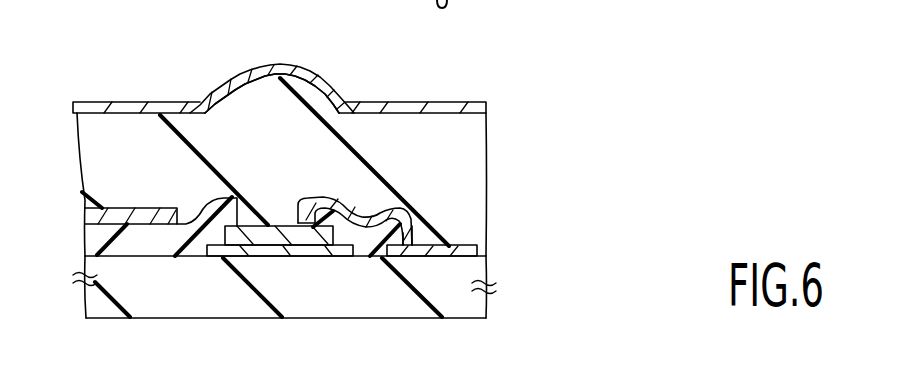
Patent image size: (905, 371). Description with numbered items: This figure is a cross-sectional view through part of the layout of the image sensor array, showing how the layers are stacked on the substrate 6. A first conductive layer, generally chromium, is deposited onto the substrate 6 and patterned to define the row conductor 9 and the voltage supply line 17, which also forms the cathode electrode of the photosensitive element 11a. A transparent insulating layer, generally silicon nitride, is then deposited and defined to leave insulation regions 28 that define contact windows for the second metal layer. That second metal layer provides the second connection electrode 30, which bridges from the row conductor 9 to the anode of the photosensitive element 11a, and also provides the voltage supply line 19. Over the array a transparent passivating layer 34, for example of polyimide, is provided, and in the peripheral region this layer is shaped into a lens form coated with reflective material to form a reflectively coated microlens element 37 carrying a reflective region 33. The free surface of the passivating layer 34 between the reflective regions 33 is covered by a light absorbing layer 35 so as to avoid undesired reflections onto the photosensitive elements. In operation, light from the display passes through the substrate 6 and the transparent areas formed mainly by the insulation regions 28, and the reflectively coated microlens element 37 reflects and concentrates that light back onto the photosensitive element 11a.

The substrate 6 is at (465, 308).
The row conductor 9 is at (467, 251).
The photosensitive element 11a is at (252, 224).
The voltage supply line 17 is at (290, 247).
The voltage supply line 19 is at (88, 217).
The insulation region 28 is at (200, 213).
The second connection electrode 30 is at (407, 217).
The reflective region 33 is at (316, 77).
The passivating layer 34 is at (466, 133).
The light absorbing layer 35 is at (146, 102).
The reflectively coated microlens element 37 is at (317, 107).